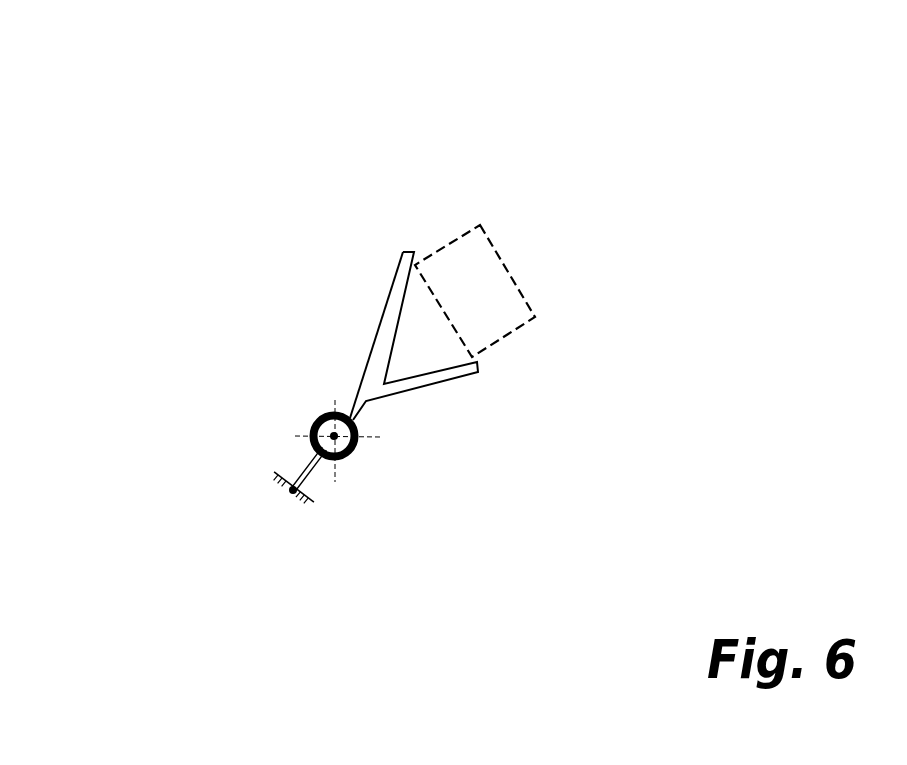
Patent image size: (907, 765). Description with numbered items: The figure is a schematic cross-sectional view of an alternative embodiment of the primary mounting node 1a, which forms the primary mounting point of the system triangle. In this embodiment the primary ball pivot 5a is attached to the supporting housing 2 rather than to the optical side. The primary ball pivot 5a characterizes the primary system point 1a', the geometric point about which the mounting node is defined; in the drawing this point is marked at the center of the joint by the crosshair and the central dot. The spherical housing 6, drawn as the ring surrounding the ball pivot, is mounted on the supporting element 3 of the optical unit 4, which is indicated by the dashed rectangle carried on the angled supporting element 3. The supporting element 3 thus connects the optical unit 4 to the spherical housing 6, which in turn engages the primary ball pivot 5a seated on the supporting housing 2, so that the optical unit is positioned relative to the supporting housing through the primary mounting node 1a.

The primary mounting node 1a is at (504, 224).
The primary system point 1a' is at (384, 480).
The supporting housing 2 is at (288, 489).
The supporting element 3 is at (387, 313).
The optical unit 4 is at (478, 223).
The primary ball pivot 5a is at (317, 444).
The spherical housing 6 is at (361, 423).